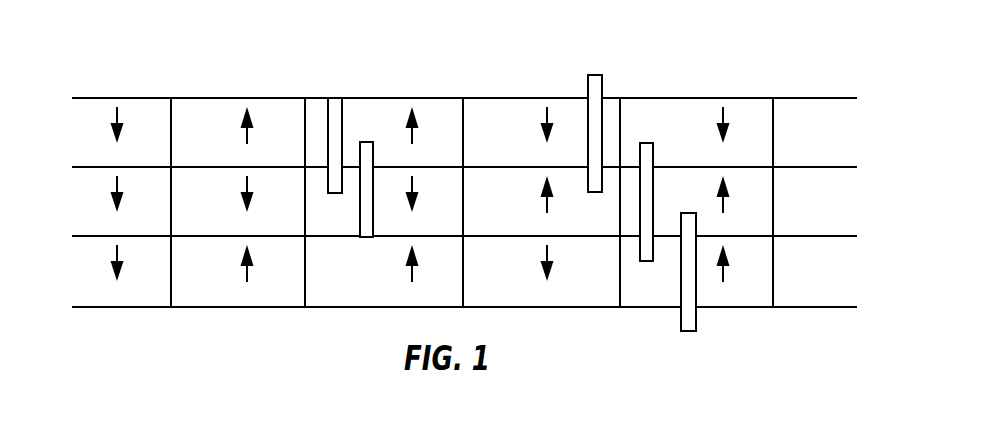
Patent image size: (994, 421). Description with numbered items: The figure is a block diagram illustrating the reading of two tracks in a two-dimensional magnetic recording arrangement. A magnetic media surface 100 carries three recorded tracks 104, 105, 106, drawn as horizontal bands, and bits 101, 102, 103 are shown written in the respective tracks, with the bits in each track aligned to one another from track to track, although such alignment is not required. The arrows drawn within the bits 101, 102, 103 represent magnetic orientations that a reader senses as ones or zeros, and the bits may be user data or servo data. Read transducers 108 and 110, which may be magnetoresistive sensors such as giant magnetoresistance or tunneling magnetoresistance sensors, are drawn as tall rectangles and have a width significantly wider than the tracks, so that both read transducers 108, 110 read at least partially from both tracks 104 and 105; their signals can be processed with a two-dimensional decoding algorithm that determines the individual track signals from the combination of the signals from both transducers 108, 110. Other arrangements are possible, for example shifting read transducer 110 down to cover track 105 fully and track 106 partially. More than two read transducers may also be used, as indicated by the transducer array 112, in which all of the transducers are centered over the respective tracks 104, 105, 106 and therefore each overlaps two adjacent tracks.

The magnetic media surface 100 is at (430, 213).
The bit 101 is at (152, 162).
The bit 102 is at (152, 230).
The bit 103 is at (152, 302).
The track 104 is at (66, 100).
The track 105 is at (66, 168).
The track 106 is at (66, 238).
The read transducer 108 is at (334, 97).
The read transducer 110 is at (366, 141).
The transducer array 112 is at (582, 64).